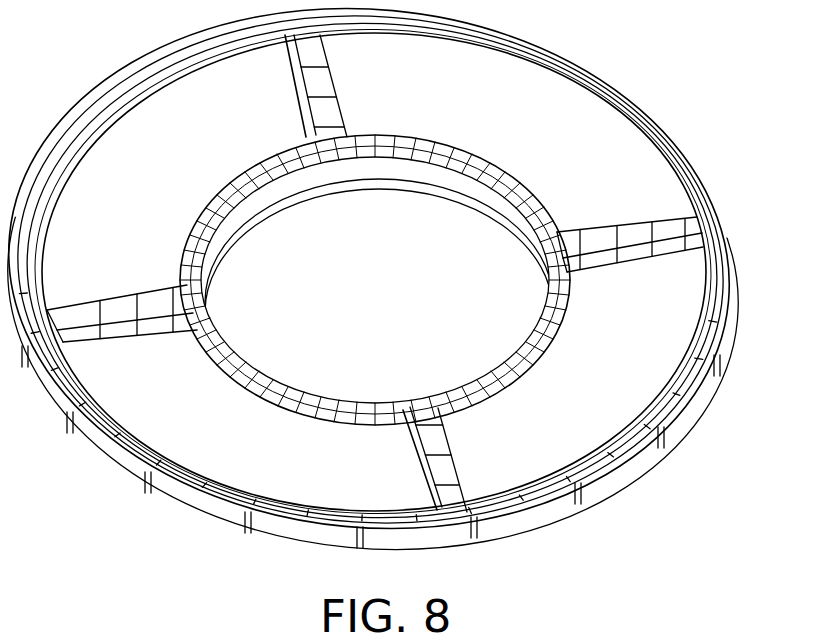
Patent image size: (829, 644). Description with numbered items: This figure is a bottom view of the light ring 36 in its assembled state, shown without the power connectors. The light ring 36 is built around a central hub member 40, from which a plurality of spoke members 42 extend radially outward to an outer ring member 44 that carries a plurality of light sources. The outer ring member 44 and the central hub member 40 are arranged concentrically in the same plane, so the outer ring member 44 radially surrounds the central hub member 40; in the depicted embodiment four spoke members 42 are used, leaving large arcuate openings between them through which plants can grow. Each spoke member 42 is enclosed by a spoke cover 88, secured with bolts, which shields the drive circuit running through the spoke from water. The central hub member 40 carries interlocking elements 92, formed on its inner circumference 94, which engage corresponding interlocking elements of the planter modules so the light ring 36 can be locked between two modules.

The light ring 36 is at (665, 90).
The central hub member 40 is at (250, 372).
The spoke members 42 is at (420, 470).
The outer ring member 44 is at (213, 502).
The spoke cover 88 is at (428, 440).
The interlocking elements 92 is at (447, 143).
The inner circumference 94 is at (502, 213).